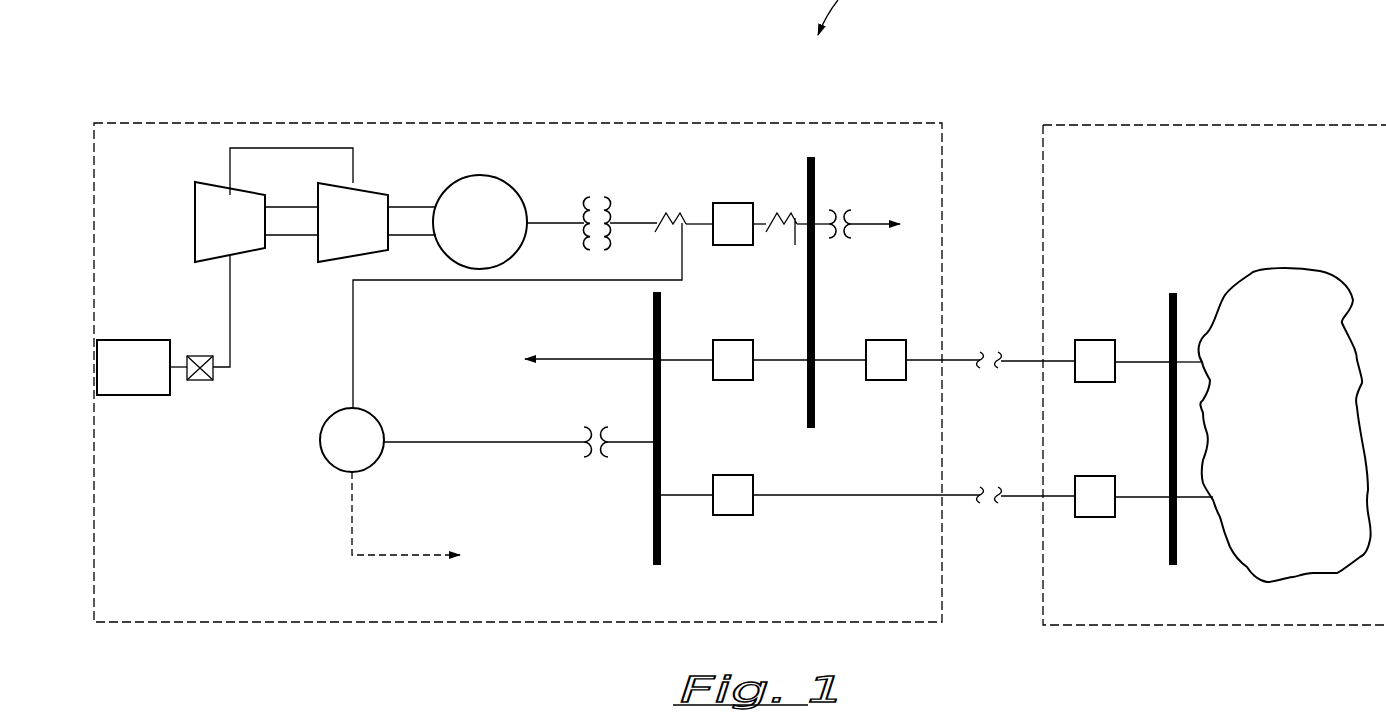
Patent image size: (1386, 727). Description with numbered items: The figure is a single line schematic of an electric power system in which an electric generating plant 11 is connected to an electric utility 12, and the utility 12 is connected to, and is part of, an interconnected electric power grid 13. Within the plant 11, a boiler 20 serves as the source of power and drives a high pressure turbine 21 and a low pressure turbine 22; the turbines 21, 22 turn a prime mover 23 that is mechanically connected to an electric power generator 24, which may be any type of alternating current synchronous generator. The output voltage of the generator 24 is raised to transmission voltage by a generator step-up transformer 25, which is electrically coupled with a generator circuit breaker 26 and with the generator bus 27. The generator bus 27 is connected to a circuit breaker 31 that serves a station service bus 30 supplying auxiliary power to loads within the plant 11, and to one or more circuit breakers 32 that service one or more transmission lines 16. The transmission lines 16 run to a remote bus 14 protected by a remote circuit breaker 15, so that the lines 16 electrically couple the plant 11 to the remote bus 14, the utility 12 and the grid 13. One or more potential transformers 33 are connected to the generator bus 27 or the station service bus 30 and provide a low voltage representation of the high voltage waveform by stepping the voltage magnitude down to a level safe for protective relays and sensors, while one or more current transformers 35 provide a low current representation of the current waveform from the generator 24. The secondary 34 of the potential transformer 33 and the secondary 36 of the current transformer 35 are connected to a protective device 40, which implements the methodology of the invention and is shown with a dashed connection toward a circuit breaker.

The electric generating plant 11 is at (653, 88).
The electric utility 12 is at (1297, 107).
The electric power grid 13 is at (1283, 293).
The remote bus 14 is at (1168, 552).
The remote circuit breaker 15 is at (1097, 475).
The transmission lines 16 is at (1025, 363).
The boiler 20 is at (133, 338).
The high pressure turbine 21 is at (195, 220).
The low pressure turbine 22 is at (367, 187).
The prime mover 23 is at (412, 223).
The electric power generator 24 is at (507, 205).
The generator step-up transformer 25 is at (625, 187).
The generator circuit breaker 26 is at (735, 203).
The generator bus 27 is at (815, 185).
The station service bus 30 is at (662, 320).
The circuit breaker 31 is at (730, 380).
The circuit breakers 32 is at (883, 380).
The potential transformer 33 is at (853, 202).
The secondary of the potential transformer 34 is at (482, 443).
The current transformer 35 is at (677, 203).
The secondary of the current transformer 36 is at (528, 283).
The protective device 40 is at (320, 442).